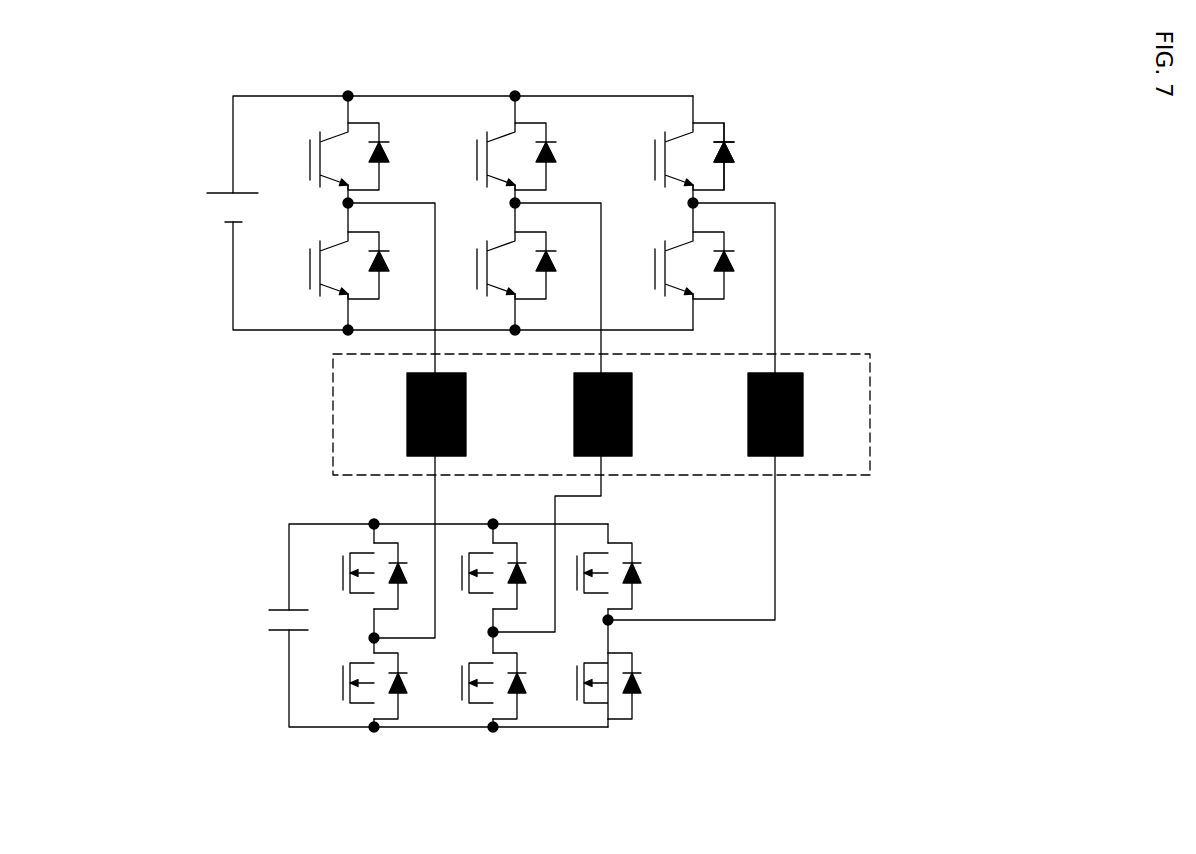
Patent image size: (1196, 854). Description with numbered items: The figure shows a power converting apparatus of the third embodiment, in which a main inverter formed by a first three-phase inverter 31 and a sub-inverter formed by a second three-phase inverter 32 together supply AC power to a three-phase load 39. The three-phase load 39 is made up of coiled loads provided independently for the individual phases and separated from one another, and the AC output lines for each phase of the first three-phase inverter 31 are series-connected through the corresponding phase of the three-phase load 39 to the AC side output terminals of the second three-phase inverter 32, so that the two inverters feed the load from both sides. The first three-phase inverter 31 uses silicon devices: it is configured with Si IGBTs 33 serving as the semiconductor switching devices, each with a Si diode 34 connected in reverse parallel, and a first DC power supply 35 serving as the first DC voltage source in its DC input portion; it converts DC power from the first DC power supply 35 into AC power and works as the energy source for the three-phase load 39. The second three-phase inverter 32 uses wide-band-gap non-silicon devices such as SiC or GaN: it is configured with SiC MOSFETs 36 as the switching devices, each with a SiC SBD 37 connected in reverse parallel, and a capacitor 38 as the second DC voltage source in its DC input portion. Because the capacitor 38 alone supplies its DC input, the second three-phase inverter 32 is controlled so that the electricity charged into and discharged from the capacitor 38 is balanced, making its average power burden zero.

The first three-phase inverter 31 is at (495, 185).
The second three-phase inverter 32 is at (463, 661).
The Si IGBT 33 is at (670, 127).
The Si diode 34 is at (742, 148).
The first DC power supply 35 is at (217, 214).
The SiC MOSFET 36 is at (597, 708).
The SiC SBD 37 is at (640, 698).
The capacitor 38 is at (275, 643).
The three-phase load 39 is at (870, 373).